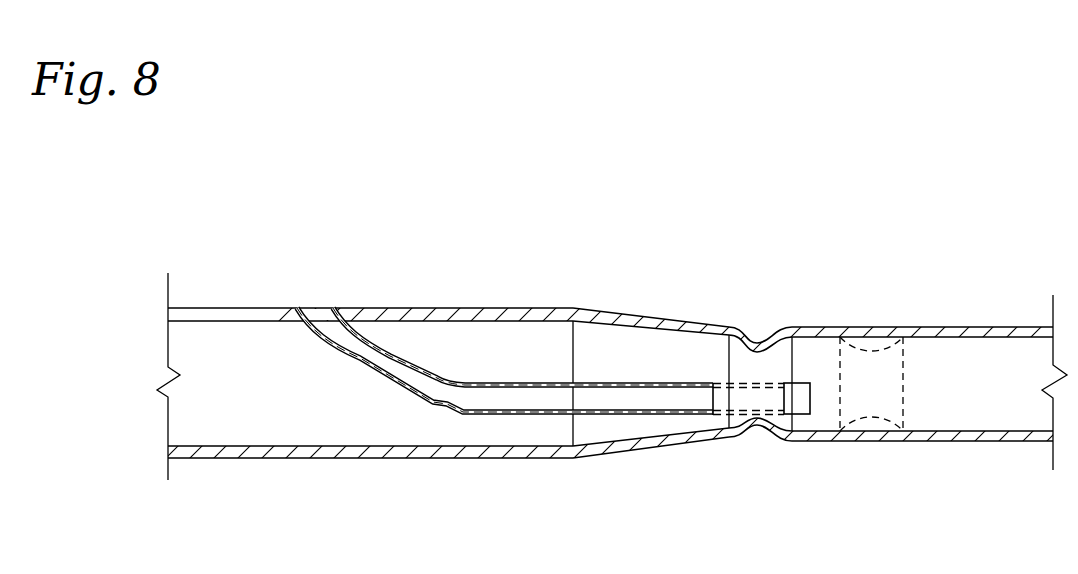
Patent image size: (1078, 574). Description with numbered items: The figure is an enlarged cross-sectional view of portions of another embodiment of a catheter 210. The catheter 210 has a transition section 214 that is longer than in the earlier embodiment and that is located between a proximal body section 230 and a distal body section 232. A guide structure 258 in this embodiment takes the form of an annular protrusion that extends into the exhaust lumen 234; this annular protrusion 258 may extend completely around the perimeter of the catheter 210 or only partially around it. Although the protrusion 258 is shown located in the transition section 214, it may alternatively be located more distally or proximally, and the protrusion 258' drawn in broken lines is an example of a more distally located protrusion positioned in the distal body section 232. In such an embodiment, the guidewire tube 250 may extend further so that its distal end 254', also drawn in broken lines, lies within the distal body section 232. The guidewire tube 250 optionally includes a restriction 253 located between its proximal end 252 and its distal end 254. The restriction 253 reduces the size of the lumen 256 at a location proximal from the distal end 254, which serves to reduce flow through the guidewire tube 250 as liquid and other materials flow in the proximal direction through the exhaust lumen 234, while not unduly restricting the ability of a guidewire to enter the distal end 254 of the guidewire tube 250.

The catheter 210 is at (760, 213).
The transition section 214 is at (800, 473).
The proximal body section 230 is at (340, 460).
The distal body section 232 is at (940, 440).
The exhaust lumen 234 is at (193, 358).
The guidewire tube 250 is at (546, 388).
The proximal end 252 is at (330, 307).
The restriction 253 is at (447, 404).
The distal end 254 is at (701, 350).
The distal end 254' is at (806, 451).
The lumen 256 is at (367, 357).
The guide structure 258 is at (775, 365).
The protrusion 258' is at (864, 443).